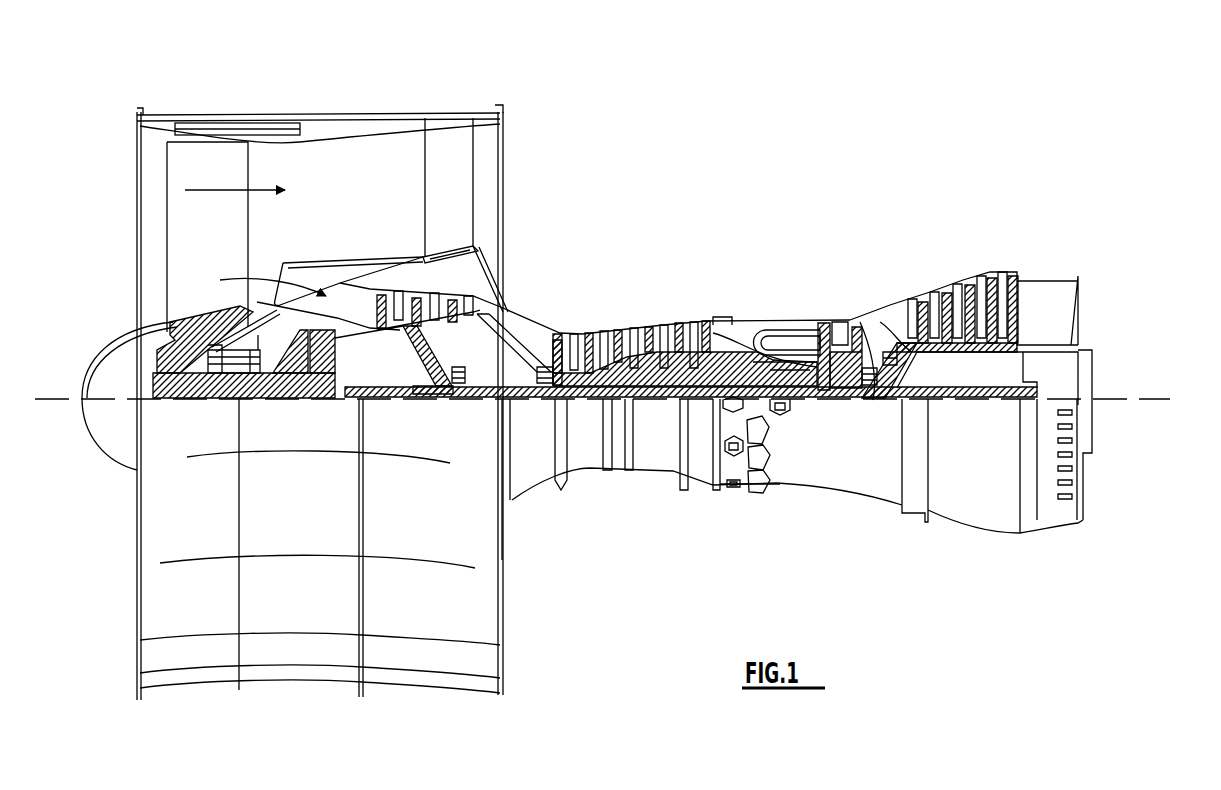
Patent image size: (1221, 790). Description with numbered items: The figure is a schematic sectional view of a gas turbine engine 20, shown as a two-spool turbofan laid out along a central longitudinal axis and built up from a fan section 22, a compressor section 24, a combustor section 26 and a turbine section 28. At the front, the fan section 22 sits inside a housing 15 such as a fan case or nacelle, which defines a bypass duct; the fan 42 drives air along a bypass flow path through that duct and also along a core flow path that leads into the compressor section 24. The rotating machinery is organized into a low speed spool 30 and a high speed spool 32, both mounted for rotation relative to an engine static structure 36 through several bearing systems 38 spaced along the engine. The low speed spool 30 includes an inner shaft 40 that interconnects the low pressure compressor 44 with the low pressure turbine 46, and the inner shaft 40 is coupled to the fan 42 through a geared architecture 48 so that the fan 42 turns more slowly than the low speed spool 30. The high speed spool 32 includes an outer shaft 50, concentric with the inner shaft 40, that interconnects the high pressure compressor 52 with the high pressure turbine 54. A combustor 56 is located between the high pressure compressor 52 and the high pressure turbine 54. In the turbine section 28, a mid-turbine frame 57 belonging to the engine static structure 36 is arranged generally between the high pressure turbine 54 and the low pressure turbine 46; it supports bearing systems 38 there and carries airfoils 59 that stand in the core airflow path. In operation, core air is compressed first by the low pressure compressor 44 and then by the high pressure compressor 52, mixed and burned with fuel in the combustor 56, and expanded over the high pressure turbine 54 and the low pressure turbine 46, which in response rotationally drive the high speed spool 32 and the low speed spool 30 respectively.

The housing 15 is at (320, 122).
The gas turbine engine 20 is at (780, 163).
The fan section 22 is at (250, 106).
The compressor section 24 is at (548, 306).
The combustor section 26 is at (772, 297).
The turbine section 28 is at (925, 256).
The low speed spool 30 is at (659, 406).
The high speed spool 32 is at (698, 362).
The engine static structure 36 is at (700, 488).
The bearing systems 38 is at (462, 388).
The inner shaft 40 is at (521, 400).
The fan 42 is at (222, 245).
The low pressure compressor 44 is at (433, 305).
The low pressure turbine 46 is at (963, 276).
The geared architecture 48 is at (326, 388).
The outer shaft 50 is at (786, 400).
The high pressure compressor 52 is at (632, 337).
The high pressure turbine 54 is at (839, 320).
The combustor 56 is at (775, 342).
The mid-turbine frame 57 is at (883, 302).
The airfoils 59 is at (912, 355).